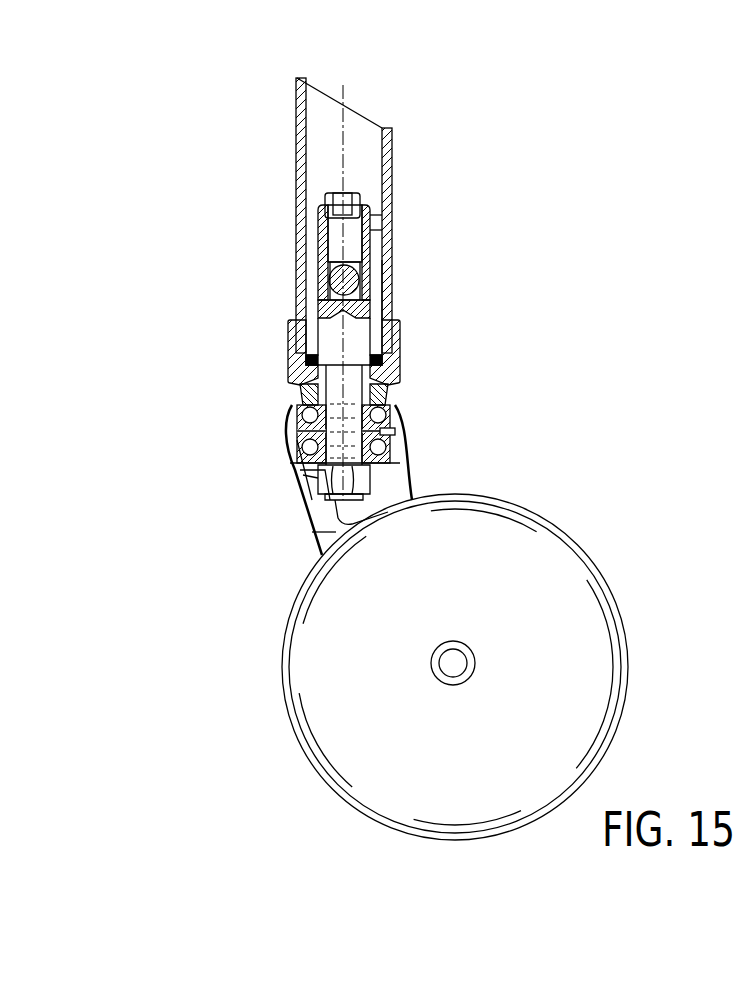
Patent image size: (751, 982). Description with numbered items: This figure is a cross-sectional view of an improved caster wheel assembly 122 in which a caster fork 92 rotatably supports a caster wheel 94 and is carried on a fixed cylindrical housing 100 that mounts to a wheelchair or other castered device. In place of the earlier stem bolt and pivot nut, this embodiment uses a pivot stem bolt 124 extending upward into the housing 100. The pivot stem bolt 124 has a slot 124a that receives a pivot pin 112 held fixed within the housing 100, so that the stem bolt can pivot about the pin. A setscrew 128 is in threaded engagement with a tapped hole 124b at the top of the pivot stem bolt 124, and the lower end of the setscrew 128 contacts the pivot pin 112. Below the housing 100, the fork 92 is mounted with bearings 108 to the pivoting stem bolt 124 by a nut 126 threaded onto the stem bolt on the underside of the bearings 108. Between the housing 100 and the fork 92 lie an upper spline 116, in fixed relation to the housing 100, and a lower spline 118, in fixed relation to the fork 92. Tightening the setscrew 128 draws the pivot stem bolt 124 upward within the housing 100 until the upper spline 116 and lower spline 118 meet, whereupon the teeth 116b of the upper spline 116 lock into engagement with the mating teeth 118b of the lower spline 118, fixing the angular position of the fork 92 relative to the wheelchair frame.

The caster wheel assembly 122 is at (535, 100).
The housing 100 is at (392, 168).
The setscrew 128 is at (368, 222).
The pivot pin 112 is at (392, 291).
The pivot stem bolt 124 is at (296, 245).
The tapped hole 124b is at (323, 210).
The slot 124a is at (336, 300).
The upper spline 116 is at (395, 392).
The teeth 116b is at (296, 383).
The lower spline 118 is at (300, 392).
The mating teeth 118b is at (395, 402).
The bearings 108 is at (287, 420).
The nut 126 is at (316, 478).
The caster fork 92 is at (413, 488).
The caster wheel 94 is at (292, 632).